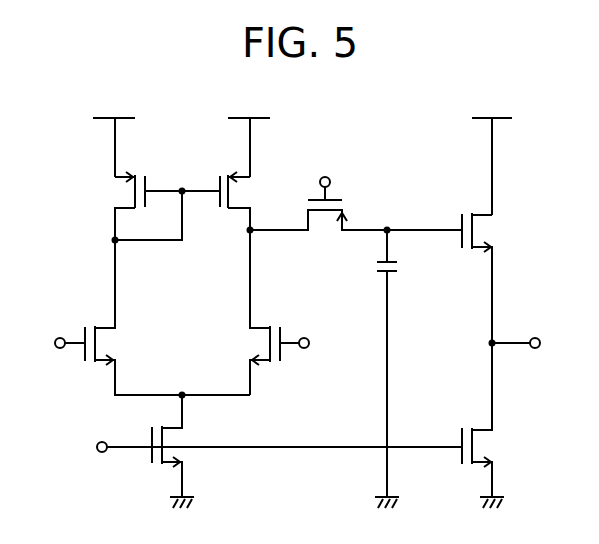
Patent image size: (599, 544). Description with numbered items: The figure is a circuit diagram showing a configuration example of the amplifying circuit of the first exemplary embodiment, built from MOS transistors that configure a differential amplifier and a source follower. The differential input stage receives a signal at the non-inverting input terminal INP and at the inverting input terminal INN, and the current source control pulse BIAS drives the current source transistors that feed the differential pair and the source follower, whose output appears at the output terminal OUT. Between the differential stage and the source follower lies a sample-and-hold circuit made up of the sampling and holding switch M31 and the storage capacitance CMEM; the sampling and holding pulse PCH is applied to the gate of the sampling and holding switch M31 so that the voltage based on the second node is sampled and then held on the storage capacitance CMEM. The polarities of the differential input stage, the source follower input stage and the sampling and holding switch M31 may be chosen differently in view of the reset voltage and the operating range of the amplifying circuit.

The sampling and holding switch M31 is at (345, 206).
The storage capacitance CMEM is at (350, 363).
The sampling and holding pulse PCH is at (324, 173).
The non-inverting input terminal INP is at (64, 360).
The inverting input terminal INN is at (305, 360).
The output terminal OUT is at (527, 360).
The current source control pulse BIAS is at (268, 466).